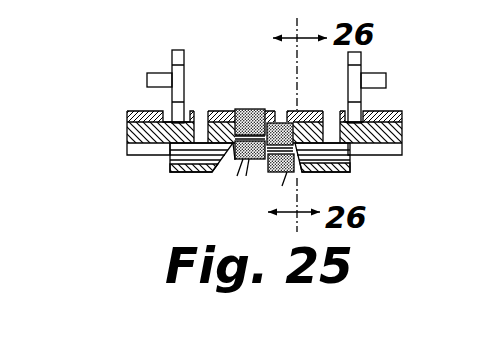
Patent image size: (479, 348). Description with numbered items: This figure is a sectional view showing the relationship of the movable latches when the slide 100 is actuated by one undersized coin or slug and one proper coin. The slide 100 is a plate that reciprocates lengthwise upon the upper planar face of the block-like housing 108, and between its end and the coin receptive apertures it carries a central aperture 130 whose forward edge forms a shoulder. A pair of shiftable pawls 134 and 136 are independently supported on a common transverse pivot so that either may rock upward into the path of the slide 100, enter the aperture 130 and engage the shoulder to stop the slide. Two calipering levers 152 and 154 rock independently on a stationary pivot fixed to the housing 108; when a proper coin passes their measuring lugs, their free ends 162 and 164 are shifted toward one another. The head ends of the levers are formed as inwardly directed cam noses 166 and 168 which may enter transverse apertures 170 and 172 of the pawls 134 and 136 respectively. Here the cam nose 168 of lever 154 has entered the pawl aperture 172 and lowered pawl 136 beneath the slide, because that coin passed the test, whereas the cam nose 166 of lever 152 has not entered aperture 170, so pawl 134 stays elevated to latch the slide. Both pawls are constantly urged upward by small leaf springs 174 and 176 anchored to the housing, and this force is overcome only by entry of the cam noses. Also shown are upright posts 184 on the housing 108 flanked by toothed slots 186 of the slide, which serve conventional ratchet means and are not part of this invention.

The slide 100 is at (402, 115).
The housing 108 is at (402, 133).
The central aperture 130 is at (296, 110).
The pawl 134 is at (260, 110).
The pawl 136 is at (270, 112).
The calipering lever 152 is at (192, 172).
The calipering lever 154 is at (338, 172).
The free end of calipering arm 162 is at (170, 162).
The free end of calipering arm 164 is at (348, 162).
The cam nose 166 is at (234, 150).
The cam nose 168 is at (293, 172).
The transverse aperture of pawl 170 is at (245, 159).
The transverse aperture of pawl 172 is at (256, 160).
The leaf spring 174 is at (250, 176).
The leaf spring 176 is at (273, 172).
The upright post 184 is at (172, 56).
The toothed slot 186 is at (202, 117).